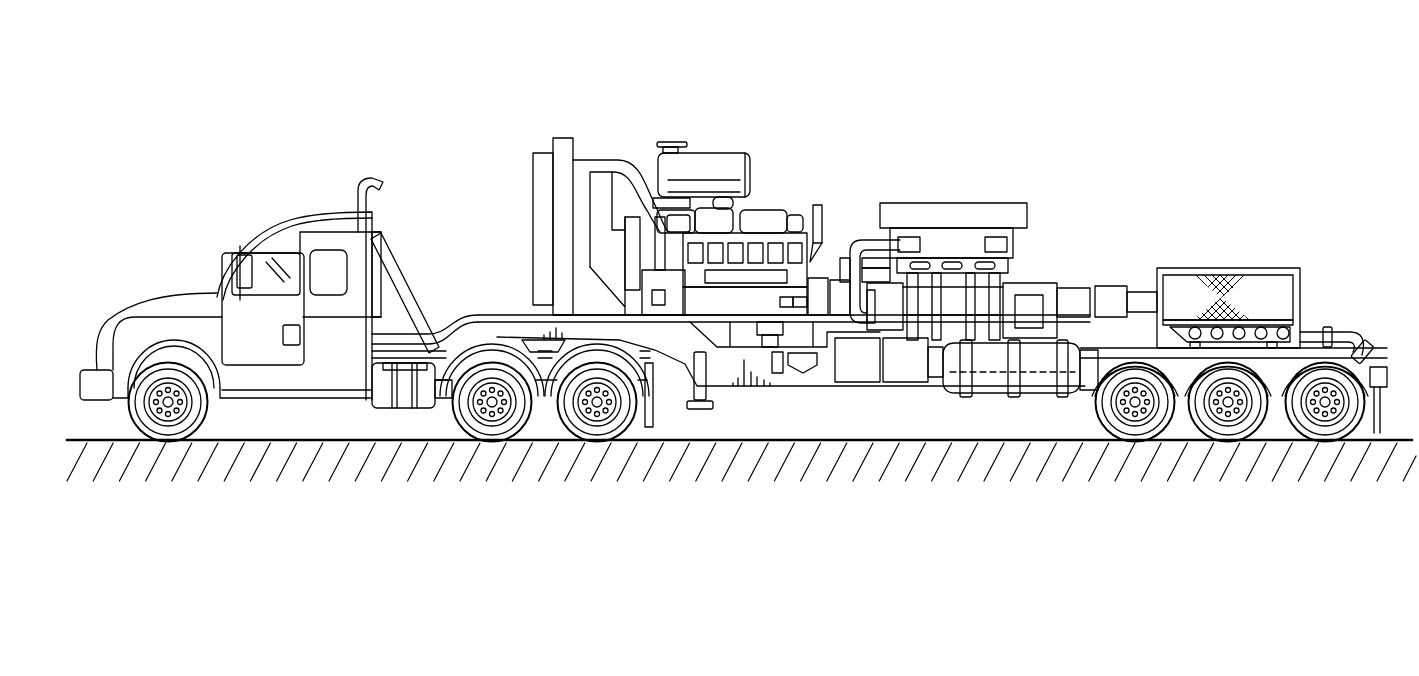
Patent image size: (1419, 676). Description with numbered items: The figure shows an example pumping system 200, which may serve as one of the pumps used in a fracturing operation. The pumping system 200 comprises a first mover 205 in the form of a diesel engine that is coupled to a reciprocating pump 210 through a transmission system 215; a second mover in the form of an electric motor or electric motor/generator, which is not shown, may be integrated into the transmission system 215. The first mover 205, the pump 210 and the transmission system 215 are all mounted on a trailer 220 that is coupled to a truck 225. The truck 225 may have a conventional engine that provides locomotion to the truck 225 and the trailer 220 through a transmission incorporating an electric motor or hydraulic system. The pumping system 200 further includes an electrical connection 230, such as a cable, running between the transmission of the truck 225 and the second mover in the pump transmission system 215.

The pumping system 200 is at (344, 57).
The first mover 205 is at (770, 238).
The reciprocating pump 210 is at (1240, 268).
The transmission system 215 is at (955, 203).
The trailer 220 is at (820, 388).
The truck 225 is at (256, 227).
The electrical connection 230 is at (473, 318).